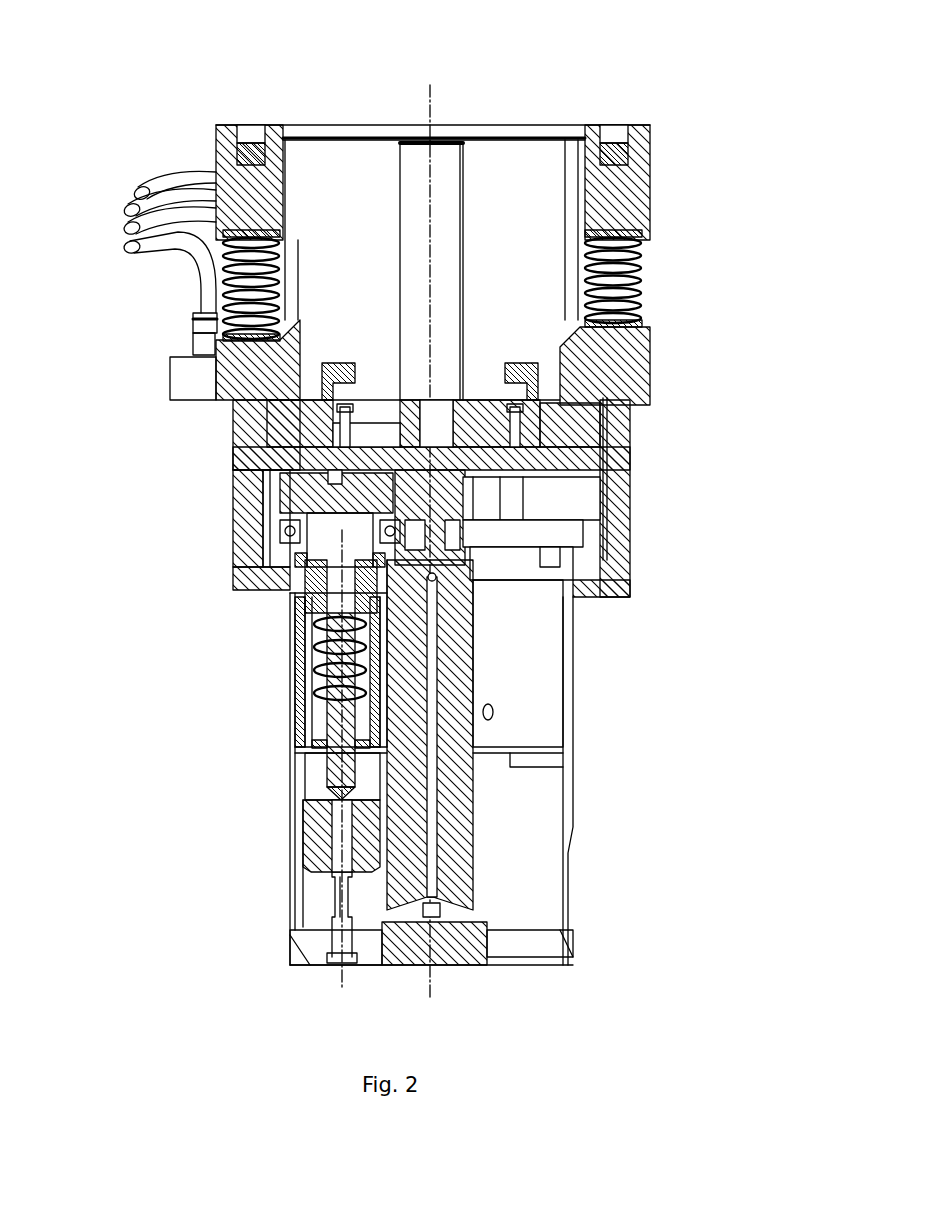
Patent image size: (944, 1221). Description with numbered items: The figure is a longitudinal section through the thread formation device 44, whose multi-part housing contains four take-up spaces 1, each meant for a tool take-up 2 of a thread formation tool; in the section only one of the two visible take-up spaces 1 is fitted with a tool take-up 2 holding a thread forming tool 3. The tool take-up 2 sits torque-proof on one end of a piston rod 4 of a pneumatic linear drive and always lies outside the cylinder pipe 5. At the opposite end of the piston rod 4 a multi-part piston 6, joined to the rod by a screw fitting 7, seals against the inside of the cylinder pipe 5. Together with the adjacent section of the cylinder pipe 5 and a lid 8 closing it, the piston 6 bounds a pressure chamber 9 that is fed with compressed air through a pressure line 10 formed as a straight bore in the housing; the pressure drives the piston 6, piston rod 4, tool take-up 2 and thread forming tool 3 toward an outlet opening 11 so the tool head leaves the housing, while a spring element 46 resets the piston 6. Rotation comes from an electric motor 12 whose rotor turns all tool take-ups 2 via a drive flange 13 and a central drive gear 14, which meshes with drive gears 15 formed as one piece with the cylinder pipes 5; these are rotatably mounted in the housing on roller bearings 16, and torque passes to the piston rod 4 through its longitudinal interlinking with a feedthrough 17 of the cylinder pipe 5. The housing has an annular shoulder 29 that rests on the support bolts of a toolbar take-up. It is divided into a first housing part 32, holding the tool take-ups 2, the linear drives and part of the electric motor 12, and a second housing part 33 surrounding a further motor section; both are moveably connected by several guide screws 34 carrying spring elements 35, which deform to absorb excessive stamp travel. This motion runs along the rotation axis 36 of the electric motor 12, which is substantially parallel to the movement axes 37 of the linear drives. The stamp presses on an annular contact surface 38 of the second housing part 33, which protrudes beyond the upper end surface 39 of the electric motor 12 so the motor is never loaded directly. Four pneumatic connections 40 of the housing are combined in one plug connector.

The take-up space 1 is at (308, 877).
The tool take-up 2 is at (317, 823).
The thread forming tool 3 is at (339, 890).
The piston rod 4 is at (317, 765).
The cylinder pipe 5 is at (300, 622).
The piston 6 is at (290, 545).
The screw fitting 7 is at (455, 676).
The lid 8 is at (300, 470).
The pressure chamber 9 is at (325, 523).
The pressure line 10 is at (262, 452).
The outlet opening 11 is at (339, 958).
The electric motor 12 is at (355, 237).
The drive flange 13 is at (520, 468).
The central drive gear 14 is at (473, 478).
The drive gear 15 is at (387, 485).
The roller bearing 16 is at (300, 560).
The feedthrough 17 is at (312, 745).
The annular shoulder 29 is at (231, 592).
The first housing part 32 is at (585, 381).
The second housing part 33 is at (640, 165).
The guide screw 34 is at (318, 277).
The spring element 35 is at (280, 263).
The rotation axis 36 is at (432, 100).
The movement axis 37 is at (343, 985).
The annular contact surface 38 is at (639, 124).
The upper end surface 39 is at (531, 140).
The pneumatic connection 40 is at (152, 192).
The thread formation device 44 is at (180, 76).
The spring element 46 is at (308, 677).